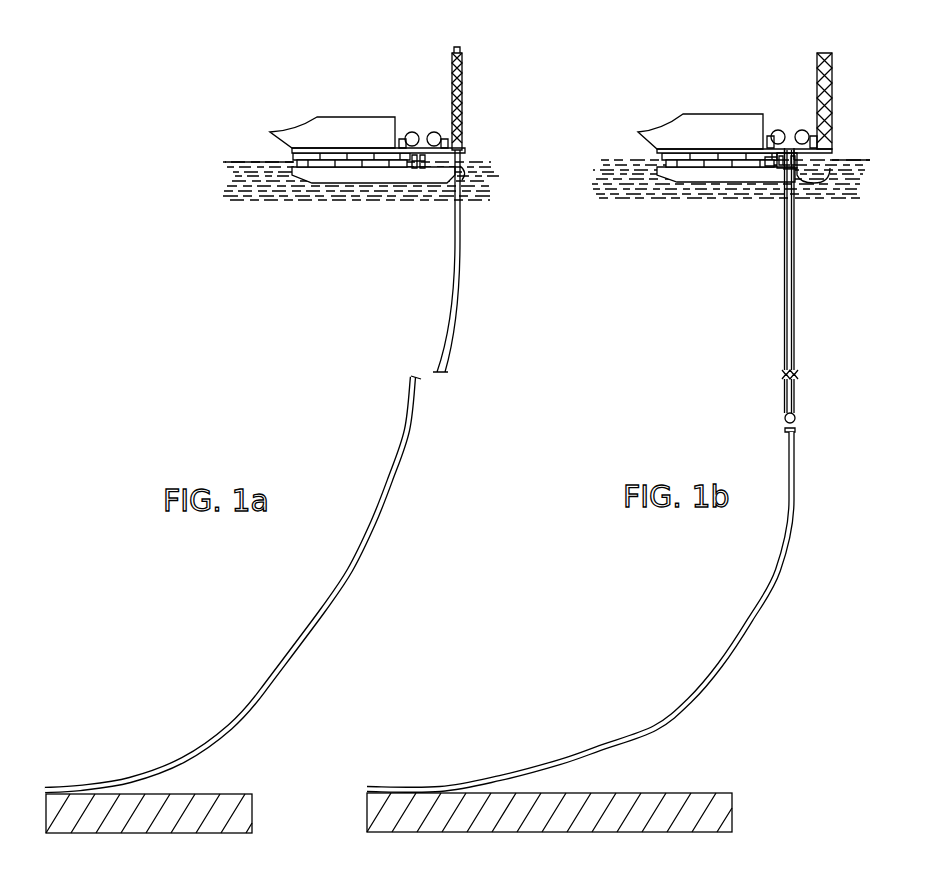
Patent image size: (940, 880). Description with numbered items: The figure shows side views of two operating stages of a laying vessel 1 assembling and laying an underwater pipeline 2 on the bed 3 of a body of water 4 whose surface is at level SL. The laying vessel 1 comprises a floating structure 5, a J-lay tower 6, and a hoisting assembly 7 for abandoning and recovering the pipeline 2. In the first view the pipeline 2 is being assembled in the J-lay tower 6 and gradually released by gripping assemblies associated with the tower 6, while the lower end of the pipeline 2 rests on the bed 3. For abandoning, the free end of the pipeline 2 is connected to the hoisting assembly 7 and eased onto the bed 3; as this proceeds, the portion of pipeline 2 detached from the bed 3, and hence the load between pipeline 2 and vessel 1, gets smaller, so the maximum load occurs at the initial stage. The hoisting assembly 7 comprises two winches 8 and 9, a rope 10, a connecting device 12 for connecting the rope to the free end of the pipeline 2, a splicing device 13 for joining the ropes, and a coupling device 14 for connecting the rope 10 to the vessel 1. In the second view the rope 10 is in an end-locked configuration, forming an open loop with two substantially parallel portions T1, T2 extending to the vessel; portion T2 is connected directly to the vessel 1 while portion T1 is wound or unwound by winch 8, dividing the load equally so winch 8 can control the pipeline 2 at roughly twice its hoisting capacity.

In FIG. 1A, the laying vessel 1 is at (420, 100).
In FIG. 1B, the laying vessel 1 is at (790, 102).
In FIG. 1A, the underwater pipeline 2 is at (302, 628).
In FIG. 1B, the underwater pipeline 2 is at (600, 745).
In FIG. 1A, the bed 3 is at (221, 800).
In FIG. 1B, the bed 3 is at (697, 800).
In FIG. 1A, the body of water 4 is at (240, 173).
In FIG. 1B, the body of water 4 is at (612, 172).
In FIG. 1A, the floating structure 5 is at (342, 177).
In FIG. 1B, the floating structure 5 is at (702, 175).
In FIG. 1A, the J-lay tower 6 is at (462, 67).
In FIG. 1B, the J-lay tower 6 is at (832, 75).
In FIG. 1A, the hoisting assembly 7 is at (432, 108).
In FIG. 1B, the hoisting assembly 7 is at (800, 113).
In FIG. 1A, the winch 8 is at (442, 123).
In FIG. 1B, the winch 8 is at (810, 120).
In FIG. 1A, the winch 9 is at (410, 130).
In FIG. 1B, the winch 9 is at (777, 120).
In FIG. 1B, the rope 10 is at (785, 345).
In FIG. 1B, the connecting device 12 is at (807, 417).
In FIG. 1B, the splicing device 13 is at (790, 173).
In FIG. 1A, the coupling device 14 is at (407, 173).
In FIG. 1B, the coupling device 14 is at (772, 170).
In FIG. 1A, the level SL is at (262, 160).
In FIG. 1B, the level SL is at (862, 157).
In FIG. 1B, the rope portion T1 is at (807, 303).
In FIG. 1B, the rope portion T2 is at (777, 262).